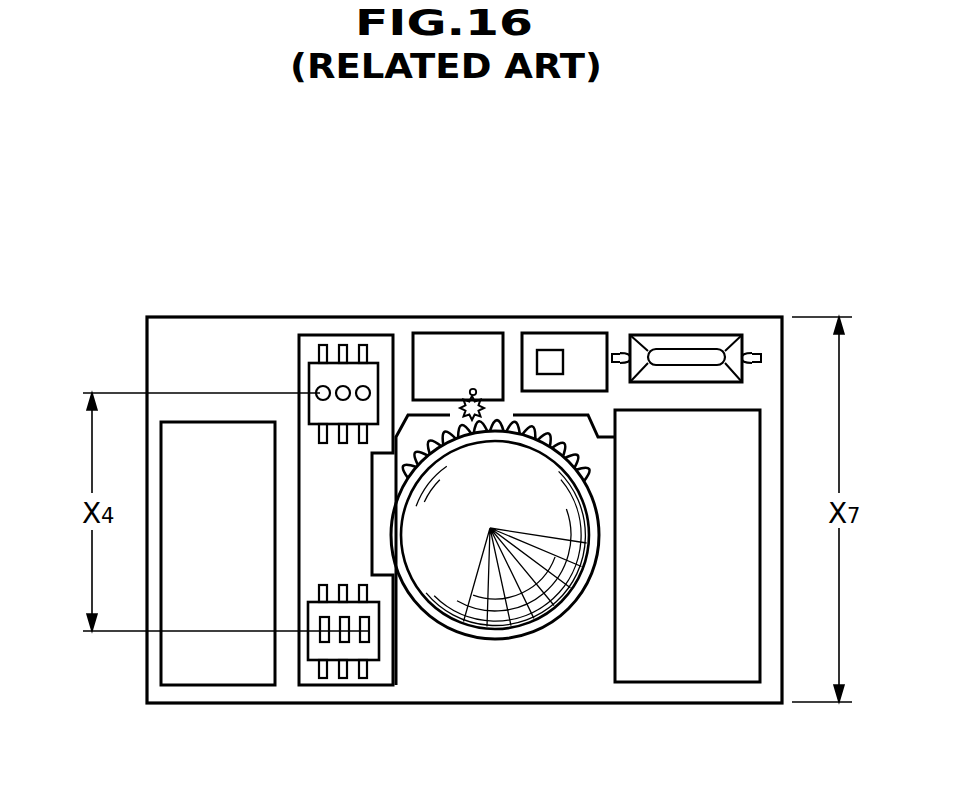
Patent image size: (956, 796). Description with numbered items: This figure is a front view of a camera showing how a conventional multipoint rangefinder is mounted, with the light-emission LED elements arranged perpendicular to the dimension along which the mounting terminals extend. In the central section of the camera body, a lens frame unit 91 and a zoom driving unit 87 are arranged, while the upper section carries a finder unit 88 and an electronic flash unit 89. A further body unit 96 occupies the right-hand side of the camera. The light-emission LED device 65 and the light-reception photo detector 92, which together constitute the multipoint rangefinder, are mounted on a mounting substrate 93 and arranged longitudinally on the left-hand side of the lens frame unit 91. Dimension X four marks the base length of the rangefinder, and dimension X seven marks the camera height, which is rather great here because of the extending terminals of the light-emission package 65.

The light-emission LED device 65 is at (314, 366).
The zoom driving unit 87 is at (457, 347).
The finder unit 88 is at (569, 343).
The electronic flash unit 89 is at (683, 336).
The lens frame unit 91 is at (495, 613).
The light-reception photo detector 92 is at (317, 650).
The mounting substrate 93 is at (299, 556).
The battery chamber 96 is at (682, 672).